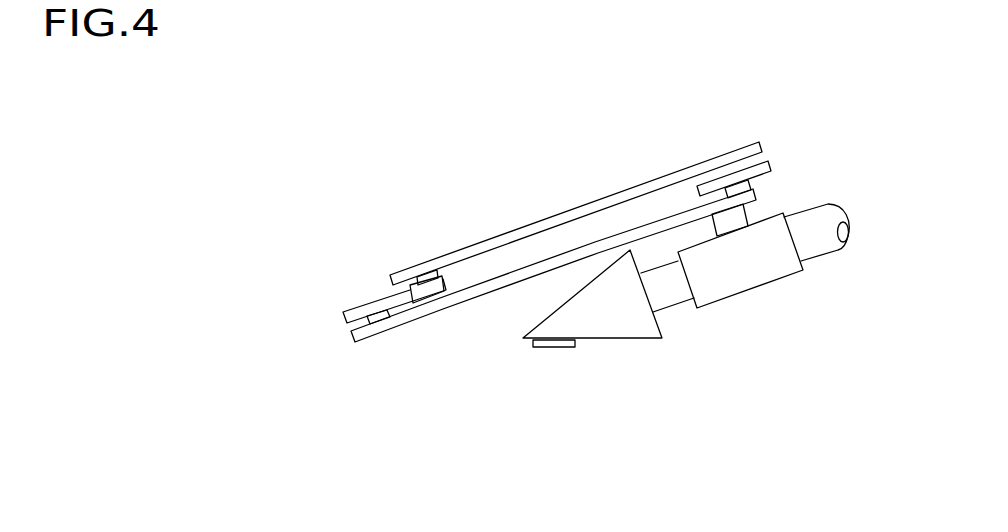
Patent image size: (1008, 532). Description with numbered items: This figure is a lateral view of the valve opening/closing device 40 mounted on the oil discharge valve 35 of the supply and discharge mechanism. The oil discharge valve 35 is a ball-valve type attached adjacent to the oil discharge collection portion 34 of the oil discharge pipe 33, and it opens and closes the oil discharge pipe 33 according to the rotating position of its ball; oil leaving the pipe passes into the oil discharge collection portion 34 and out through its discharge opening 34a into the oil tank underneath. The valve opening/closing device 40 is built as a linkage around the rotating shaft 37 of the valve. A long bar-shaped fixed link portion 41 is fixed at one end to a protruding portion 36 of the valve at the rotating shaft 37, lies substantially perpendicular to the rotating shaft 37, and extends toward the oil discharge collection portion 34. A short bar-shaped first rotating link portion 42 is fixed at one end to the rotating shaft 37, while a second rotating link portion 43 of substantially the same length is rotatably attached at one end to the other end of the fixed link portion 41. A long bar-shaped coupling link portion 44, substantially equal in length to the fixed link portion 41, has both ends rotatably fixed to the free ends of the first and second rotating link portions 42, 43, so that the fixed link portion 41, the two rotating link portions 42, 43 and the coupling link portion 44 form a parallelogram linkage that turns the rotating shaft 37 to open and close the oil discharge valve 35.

The valve opening/closing device 40 is at (632, 176).
The oil discharge pipe 33 is at (842, 249).
The oil discharge collection portion 34 is at (632, 341).
The discharge opening 34a is at (545, 348).
The oil discharge valve 35 is at (757, 286).
The protruding portion 36 is at (770, 208).
The rotating shaft 37 is at (768, 190).
The fixed link portion 41 is at (465, 303).
The first rotating link portion 42 is at (769, 168).
The second rotating link portion 43 is at (357, 307).
The coupling link portion 44 is at (470, 246).